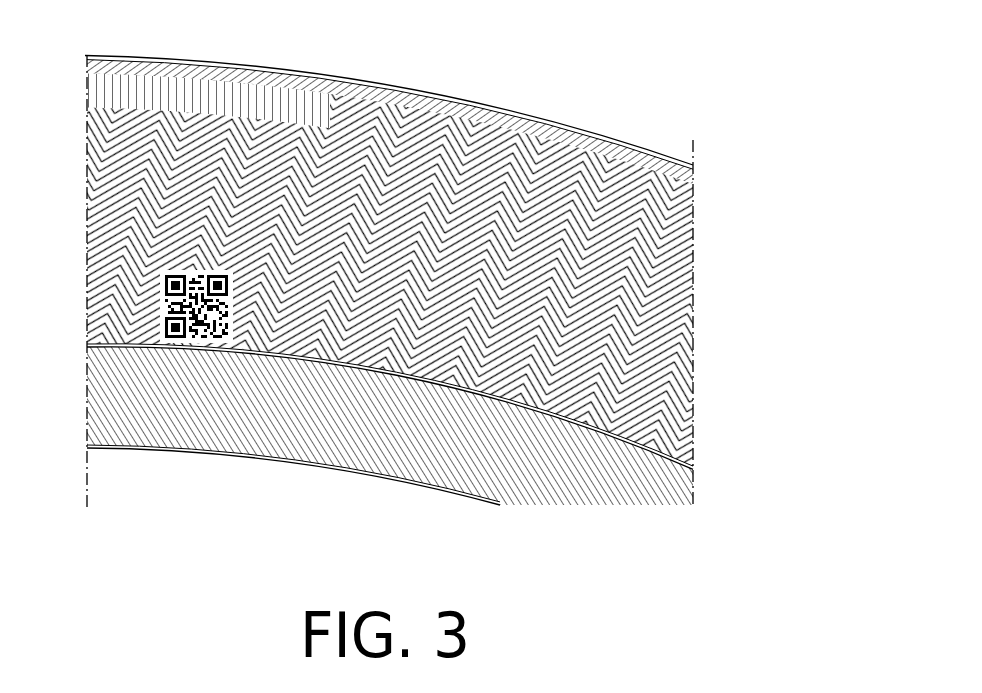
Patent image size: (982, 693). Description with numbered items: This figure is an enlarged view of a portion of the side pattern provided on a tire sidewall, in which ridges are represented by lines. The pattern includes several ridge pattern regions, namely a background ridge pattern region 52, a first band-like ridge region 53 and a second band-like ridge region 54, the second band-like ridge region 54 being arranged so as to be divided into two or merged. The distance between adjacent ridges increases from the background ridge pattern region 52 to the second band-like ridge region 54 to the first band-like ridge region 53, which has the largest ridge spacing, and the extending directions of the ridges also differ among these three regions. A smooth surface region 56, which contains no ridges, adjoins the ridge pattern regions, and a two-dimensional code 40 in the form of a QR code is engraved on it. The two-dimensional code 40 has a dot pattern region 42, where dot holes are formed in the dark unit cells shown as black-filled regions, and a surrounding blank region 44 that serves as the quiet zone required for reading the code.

The two-dimensional code 40 is at (132, 383).
The dot pattern region 42 is at (172, 311).
The blank region 44 is at (165, 328).
The background ridge pattern region 52 is at (393, 83).
The first band-like ridge region 53 is at (370, 118).
The second band-like ridge region 54 is at (553, 128).
The smooth surface region 56 is at (160, 341).